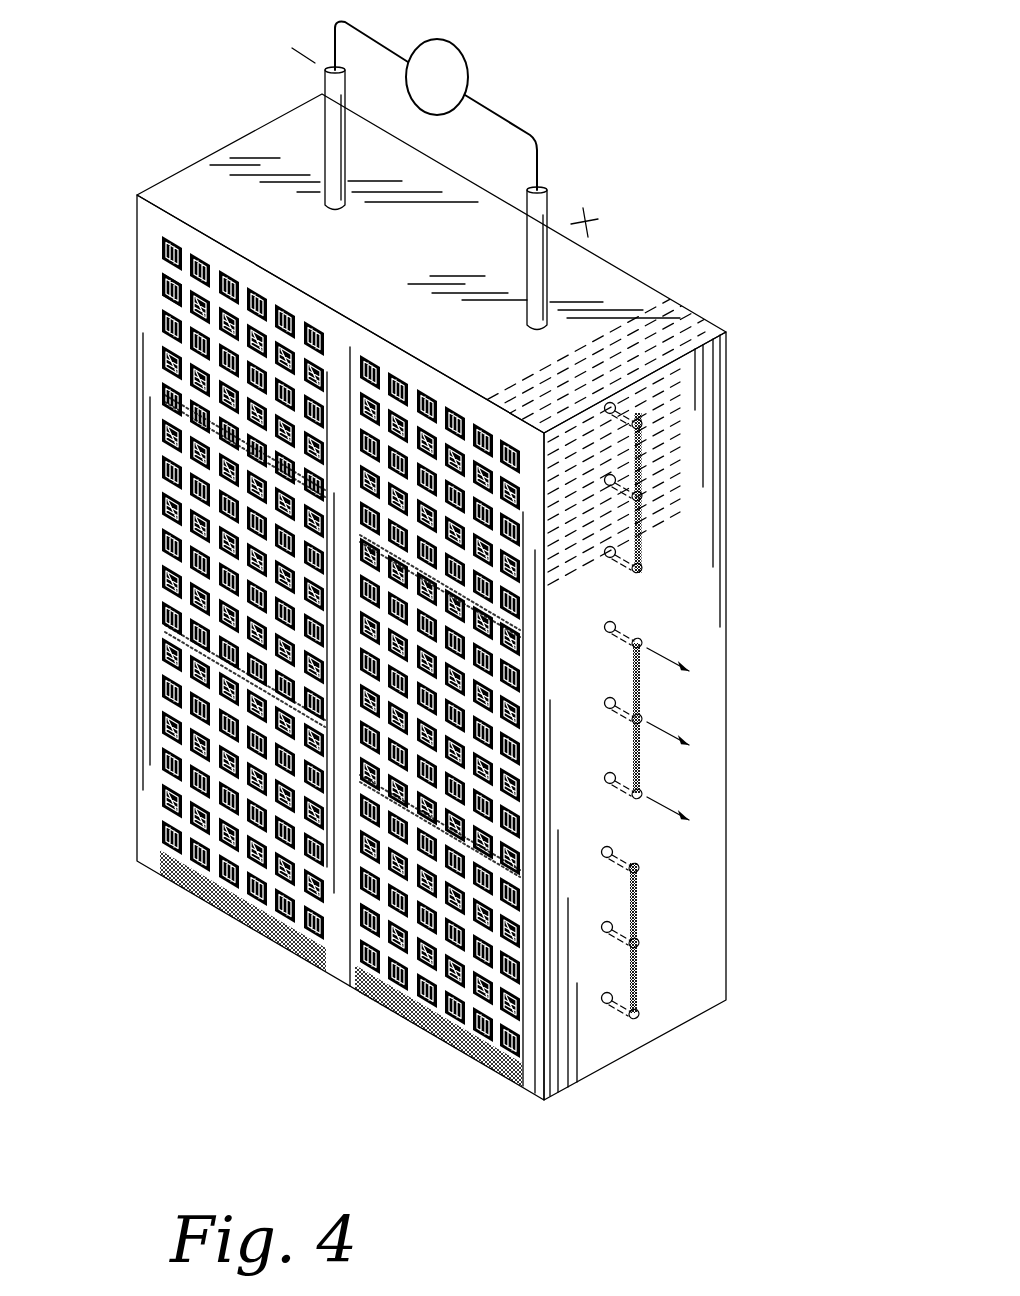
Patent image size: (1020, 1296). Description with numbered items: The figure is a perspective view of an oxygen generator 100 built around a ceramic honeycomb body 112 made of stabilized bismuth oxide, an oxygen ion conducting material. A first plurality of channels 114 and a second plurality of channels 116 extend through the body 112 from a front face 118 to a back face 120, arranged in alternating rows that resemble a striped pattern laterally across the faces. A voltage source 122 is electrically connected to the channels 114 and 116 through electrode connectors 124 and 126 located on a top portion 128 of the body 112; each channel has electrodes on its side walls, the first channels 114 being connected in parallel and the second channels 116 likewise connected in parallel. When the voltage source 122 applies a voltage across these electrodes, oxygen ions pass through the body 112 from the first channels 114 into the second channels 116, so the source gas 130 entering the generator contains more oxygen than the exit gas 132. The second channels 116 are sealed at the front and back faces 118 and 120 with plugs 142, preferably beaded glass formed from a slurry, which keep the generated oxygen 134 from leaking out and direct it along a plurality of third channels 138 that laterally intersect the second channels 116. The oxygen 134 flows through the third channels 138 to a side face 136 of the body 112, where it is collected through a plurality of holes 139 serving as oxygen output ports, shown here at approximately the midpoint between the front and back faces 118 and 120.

The oxygen generator 100 is at (136, 162).
The ceramic honeycomb body 112 is at (134, 685).
The first plurality of channels 114 is at (165, 246).
The second plurality of channels 116 is at (166, 283).
The front face 118 is at (350, 903).
The back face 120 is at (742, 614).
The voltage source 122 is at (470, 58).
The electrode connector 124 is at (547, 268).
The electrode connector 126 is at (329, 130).
The top portion 128 is at (632, 336).
The source gas 130 is at (168, 916).
The exit gas 132 is at (760, 510).
The oxygen 134 is at (703, 668).
The side face 136 is at (678, 913).
The third channels 138 is at (622, 563).
The holes 139 is at (675, 985).
The plugs 142 is at (372, 357).